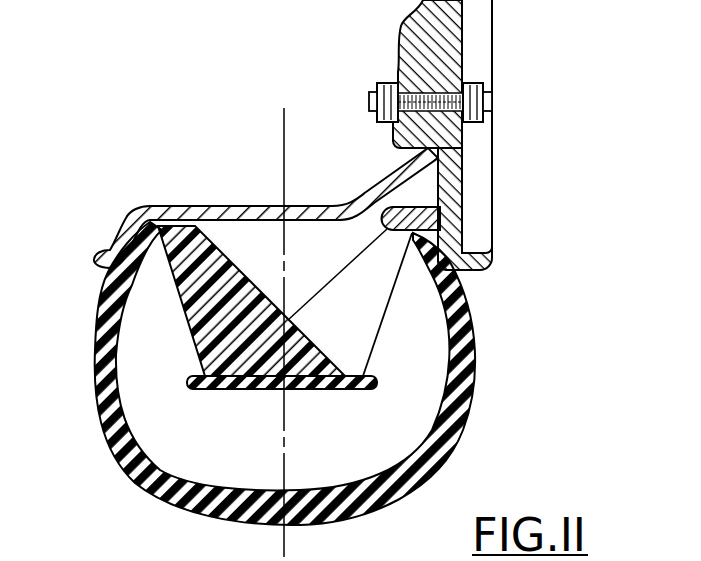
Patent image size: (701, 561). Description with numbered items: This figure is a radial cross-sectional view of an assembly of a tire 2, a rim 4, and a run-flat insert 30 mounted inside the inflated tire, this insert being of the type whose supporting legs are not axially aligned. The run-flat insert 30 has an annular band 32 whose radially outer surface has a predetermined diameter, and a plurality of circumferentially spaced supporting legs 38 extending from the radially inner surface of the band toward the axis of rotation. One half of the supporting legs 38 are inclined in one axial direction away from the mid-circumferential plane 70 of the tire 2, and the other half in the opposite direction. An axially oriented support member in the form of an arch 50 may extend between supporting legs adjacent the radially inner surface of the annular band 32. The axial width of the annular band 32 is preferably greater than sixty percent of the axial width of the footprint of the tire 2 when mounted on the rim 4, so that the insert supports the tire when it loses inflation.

The tire 2 is at (468, 412).
The rim 4 is at (253, 207).
The run-flat insert 30 is at (320, 389).
The annular band 32 is at (192, 377).
The supporting leg 38 is at (374, 316).
The arch 50 is at (341, 368).
The mid-circumferential plane 70 is at (284, 157).